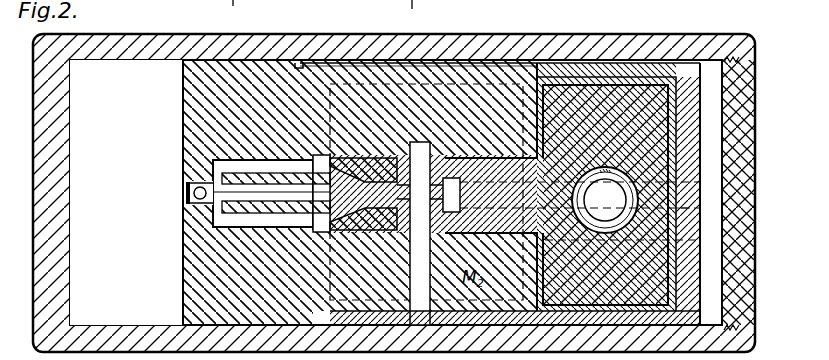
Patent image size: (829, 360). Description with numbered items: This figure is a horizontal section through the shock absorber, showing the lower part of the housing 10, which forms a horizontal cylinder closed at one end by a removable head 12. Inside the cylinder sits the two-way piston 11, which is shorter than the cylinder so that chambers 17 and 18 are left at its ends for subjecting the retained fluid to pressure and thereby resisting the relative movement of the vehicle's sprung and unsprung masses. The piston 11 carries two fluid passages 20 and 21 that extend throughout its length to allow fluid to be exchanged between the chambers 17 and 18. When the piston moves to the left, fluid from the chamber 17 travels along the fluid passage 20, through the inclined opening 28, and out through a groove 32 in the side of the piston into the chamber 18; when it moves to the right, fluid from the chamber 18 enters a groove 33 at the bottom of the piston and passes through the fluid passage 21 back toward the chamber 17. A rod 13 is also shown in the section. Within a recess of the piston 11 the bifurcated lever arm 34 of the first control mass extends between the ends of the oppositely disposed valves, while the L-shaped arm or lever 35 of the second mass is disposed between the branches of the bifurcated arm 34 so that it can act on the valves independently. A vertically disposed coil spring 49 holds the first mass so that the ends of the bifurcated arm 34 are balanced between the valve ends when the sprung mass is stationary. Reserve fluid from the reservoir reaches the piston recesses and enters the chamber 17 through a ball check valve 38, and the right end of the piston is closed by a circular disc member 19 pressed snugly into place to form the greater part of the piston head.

The housing 10 is at (46, 76).
The two-way piston 11 is at (191, 103).
The removable head 12 is at (752, 154).
The rod 13 is at (425, 316).
The chamber 17 is at (126, 127).
The chamber 18 is at (720, 155).
The circular disc member 19 is at (688, 209).
The fluid passage 20 is at (555, 64).
The fluid passage 21 is at (258, 17).
The inclined opening 28 is at (299, 64).
The groove 32 is at (357, 64).
The groove 33 is at (424, 11).
The bifurcated lever arm 34 is at (222, 177).
The L-shaped arm or lever 35 is at (215, 205).
The ball check valve 38 is at (195, 193).
The coil spring 49 is at (612, 0).